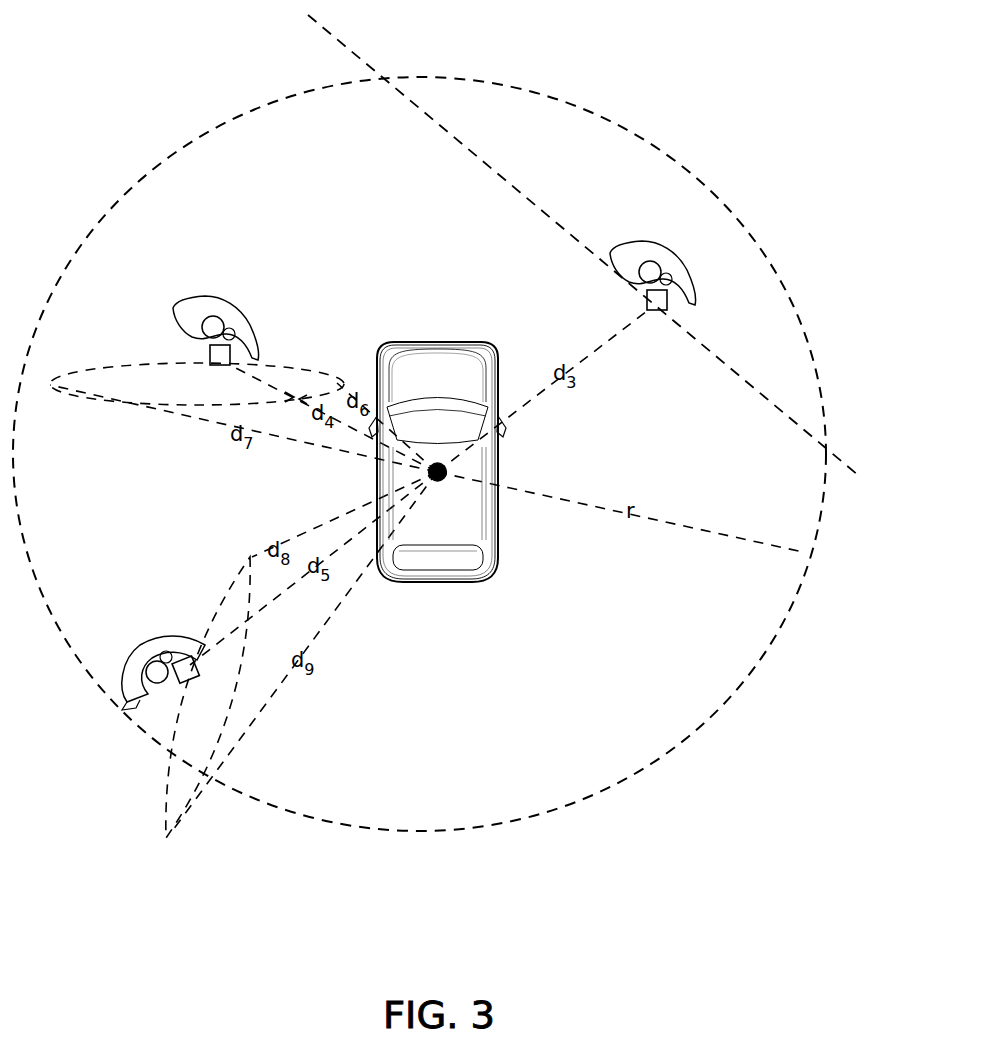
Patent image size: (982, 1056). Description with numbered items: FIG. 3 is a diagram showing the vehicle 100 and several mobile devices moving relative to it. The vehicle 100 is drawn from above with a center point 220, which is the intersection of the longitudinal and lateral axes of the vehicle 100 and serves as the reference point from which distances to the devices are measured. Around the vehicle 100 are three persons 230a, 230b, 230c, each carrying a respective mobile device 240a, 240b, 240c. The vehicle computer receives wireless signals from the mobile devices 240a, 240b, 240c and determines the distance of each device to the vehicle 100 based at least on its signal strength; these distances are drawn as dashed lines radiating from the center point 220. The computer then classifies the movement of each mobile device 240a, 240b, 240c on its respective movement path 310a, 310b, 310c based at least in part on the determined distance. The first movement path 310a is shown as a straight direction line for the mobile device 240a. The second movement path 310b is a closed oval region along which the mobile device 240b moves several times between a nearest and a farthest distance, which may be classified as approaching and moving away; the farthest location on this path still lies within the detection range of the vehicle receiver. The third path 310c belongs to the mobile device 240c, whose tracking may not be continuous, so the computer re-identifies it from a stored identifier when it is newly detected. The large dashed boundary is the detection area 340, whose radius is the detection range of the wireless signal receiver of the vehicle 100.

The vehicle 100 is at (457, 583).
The center point 220 is at (440, 477).
The person 230a is at (640, 248).
The person 230b is at (222, 300).
The person 230c is at (167, 638).
The mobile device 240a is at (668, 303).
The mobile device 240b is at (207, 358).
The mobile device 240c is at (188, 680).
The movement path 310a is at (468, 149).
The second movement path 310b is at (132, 365).
The third path 310c is at (166, 788).
The detection area 340 is at (246, 113).